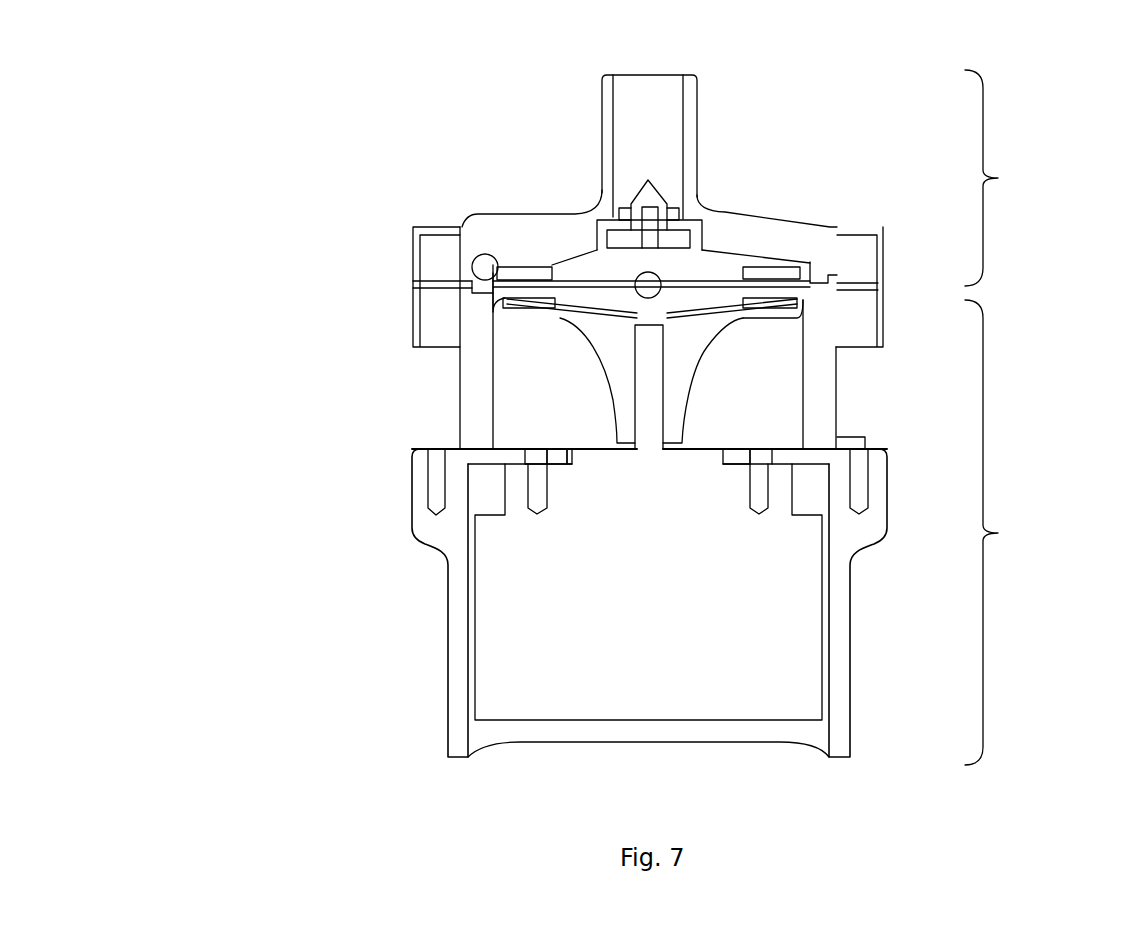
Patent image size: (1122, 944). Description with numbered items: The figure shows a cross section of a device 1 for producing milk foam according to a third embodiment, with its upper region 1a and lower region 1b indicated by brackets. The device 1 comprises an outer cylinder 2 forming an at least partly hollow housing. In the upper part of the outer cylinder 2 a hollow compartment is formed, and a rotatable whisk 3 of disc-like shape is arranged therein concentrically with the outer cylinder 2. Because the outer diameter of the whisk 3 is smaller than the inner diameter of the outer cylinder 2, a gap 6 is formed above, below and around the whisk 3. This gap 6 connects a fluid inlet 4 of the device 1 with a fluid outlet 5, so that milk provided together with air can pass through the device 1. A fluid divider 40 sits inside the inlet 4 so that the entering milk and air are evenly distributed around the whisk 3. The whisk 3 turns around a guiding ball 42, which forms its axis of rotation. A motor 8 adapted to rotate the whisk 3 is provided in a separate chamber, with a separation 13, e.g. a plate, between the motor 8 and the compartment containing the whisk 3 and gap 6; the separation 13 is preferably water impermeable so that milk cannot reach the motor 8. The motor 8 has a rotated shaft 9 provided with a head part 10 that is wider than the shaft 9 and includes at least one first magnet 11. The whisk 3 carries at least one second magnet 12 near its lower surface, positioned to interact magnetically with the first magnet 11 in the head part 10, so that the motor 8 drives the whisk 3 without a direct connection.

The device 1 is at (880, 118).
The upper housing part 1a is at (1024, 178).
The lower housing part 1b is at (1024, 532).
The outer cylinder 2 is at (483, 430).
The whisk 3 is at (713, 268).
The fluid inlet 4 is at (648, 100).
The fluid outlet 5 is at (482, 265).
The gap 6 is at (810, 268).
The motor 8 is at (550, 690).
The shaft 9 is at (648, 375).
The head part 10 is at (593, 320).
The first magnet 11 is at (500, 303).
The second magnet 12 is at (540, 270).
The separation 13 is at (490, 290).
The fluid divider 40 is at (655, 195).
The guiding ball 42 is at (648, 285).